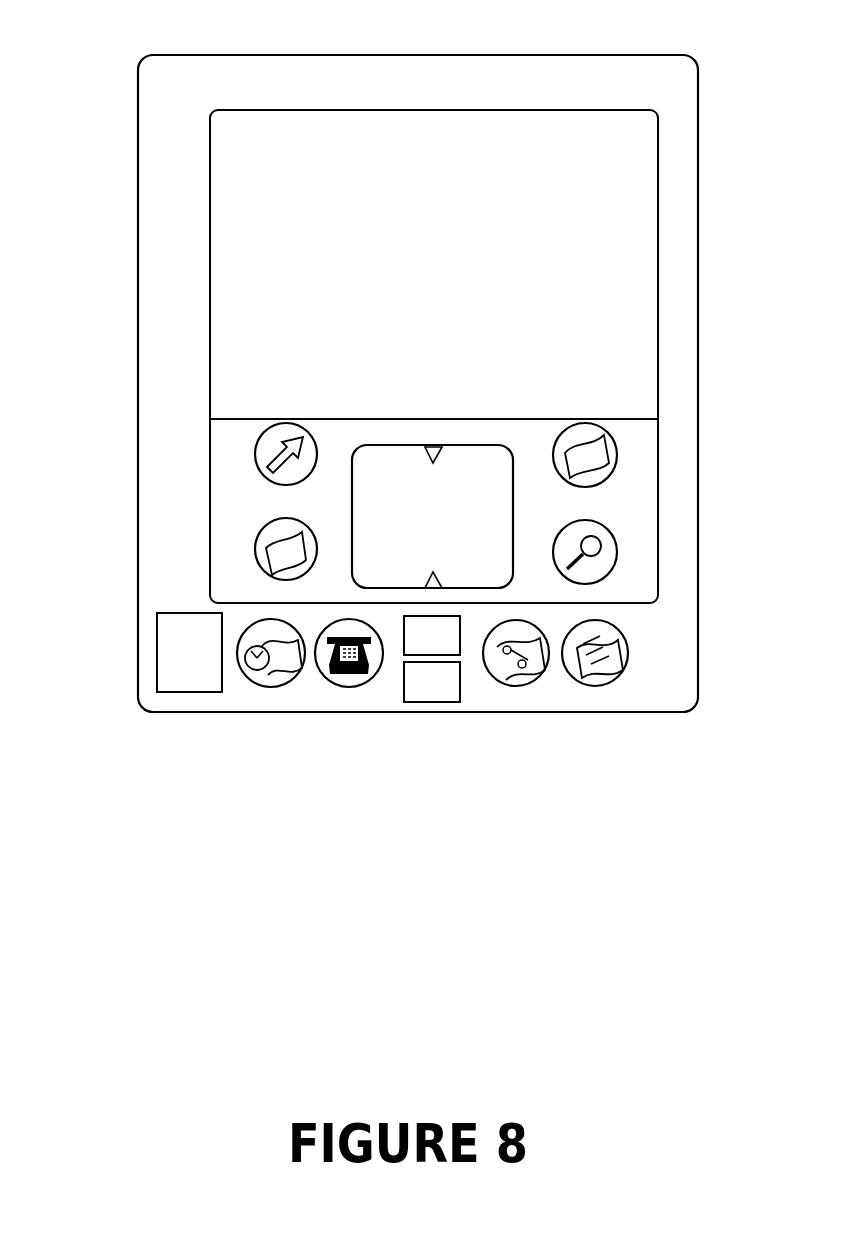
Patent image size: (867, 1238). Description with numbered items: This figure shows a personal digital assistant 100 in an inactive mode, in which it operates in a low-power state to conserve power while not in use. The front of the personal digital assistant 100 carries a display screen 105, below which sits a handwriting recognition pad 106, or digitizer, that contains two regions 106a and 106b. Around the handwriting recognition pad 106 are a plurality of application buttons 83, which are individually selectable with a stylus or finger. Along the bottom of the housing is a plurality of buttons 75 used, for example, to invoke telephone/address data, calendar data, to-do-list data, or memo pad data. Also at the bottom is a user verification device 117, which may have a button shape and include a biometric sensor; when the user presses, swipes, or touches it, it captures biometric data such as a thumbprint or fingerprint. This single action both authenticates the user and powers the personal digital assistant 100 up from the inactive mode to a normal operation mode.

The personal digital assistant 100 is at (418, 54).
The display screen 105 is at (448, 410).
The handwriting recognition pad 106 is at (418, 516).
The region 106a is at (368, 533).
The region 106b is at (497, 553).
The application buttons 83 is at (255, 452).
The user verification device 117 is at (208, 675).
The buttons 75 is at (595, 687).